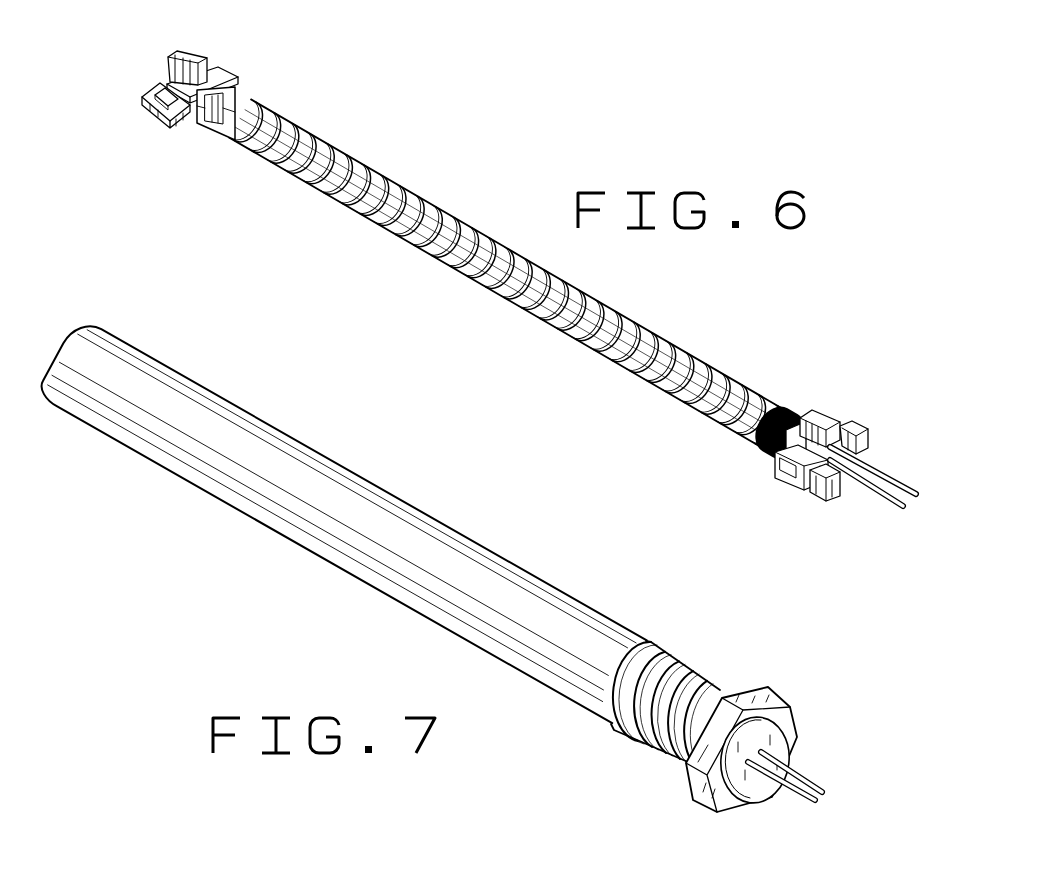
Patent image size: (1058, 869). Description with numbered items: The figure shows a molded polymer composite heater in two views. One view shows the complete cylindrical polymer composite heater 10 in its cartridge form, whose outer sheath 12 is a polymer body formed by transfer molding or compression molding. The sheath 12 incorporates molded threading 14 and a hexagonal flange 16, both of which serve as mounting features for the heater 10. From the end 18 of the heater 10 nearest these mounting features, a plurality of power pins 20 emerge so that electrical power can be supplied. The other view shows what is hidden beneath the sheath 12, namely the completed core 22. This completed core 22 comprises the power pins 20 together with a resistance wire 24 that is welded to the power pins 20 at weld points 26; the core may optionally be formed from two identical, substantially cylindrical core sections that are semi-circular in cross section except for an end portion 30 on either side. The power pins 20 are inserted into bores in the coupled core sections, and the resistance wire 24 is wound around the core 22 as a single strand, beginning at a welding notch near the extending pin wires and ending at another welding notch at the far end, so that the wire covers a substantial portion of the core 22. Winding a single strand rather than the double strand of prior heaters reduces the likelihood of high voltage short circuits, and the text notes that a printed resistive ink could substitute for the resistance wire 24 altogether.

In FIG. 7, the cylindrical polymer composite heater 10 is at (380, 630).
In FIG. 7, the sheath 12 is at (249, 410).
In FIG. 7, the molded threading 14 is at (695, 662).
In FIG. 7, the hexagonal flange 16 is at (787, 704).
In FIG. 7, the end 18 is at (772, 743).
In FIG. 6, the power pins 20 is at (918, 498).
In FIG. 7, the power pins 20 is at (816, 804).
In FIG. 6, the completed core 22 is at (690, 322).
In FIG. 6, the resistance wire 24 is at (347, 157).
In FIG. 6, the weld points 26 is at (208, 132).
In FIG. 6, the end portion 30 is at (187, 48).